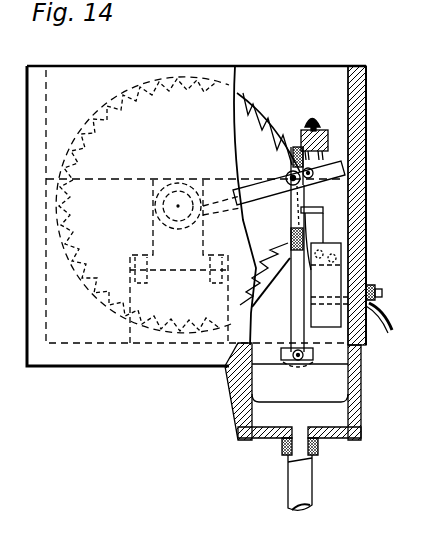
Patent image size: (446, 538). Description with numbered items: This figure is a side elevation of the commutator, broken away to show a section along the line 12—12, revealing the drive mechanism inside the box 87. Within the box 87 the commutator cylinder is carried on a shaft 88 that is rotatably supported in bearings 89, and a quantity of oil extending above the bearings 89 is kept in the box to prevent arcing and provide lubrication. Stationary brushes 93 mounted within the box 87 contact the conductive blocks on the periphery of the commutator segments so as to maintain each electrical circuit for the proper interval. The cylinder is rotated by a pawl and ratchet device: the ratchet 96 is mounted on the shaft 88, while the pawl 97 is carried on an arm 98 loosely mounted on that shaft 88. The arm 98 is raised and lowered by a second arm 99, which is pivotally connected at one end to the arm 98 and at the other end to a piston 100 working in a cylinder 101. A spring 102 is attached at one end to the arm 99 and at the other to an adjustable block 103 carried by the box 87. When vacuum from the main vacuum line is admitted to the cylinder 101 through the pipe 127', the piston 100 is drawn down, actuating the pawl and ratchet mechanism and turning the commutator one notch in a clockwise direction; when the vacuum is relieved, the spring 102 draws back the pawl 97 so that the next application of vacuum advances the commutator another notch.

The ratchet wheel 12 is at (175, 169).
The box 87 is at (371, 84).
The shaft 88 is at (179, 192).
The bearings 89 is at (152, 222).
The stationary brushes 93 is at (321, 213).
The ratchet 96 is at (248, 130).
The pawl 97 is at (301, 183).
The arm 98 is at (261, 192).
The arm 99 is at (291, 226).
The piston 100 is at (295, 398).
The cylinder 101 is at (340, 416).
The spring 102 is at (295, 143).
The adjustable block 103 is at (331, 131).
The pipe 127' is at (278, 482).